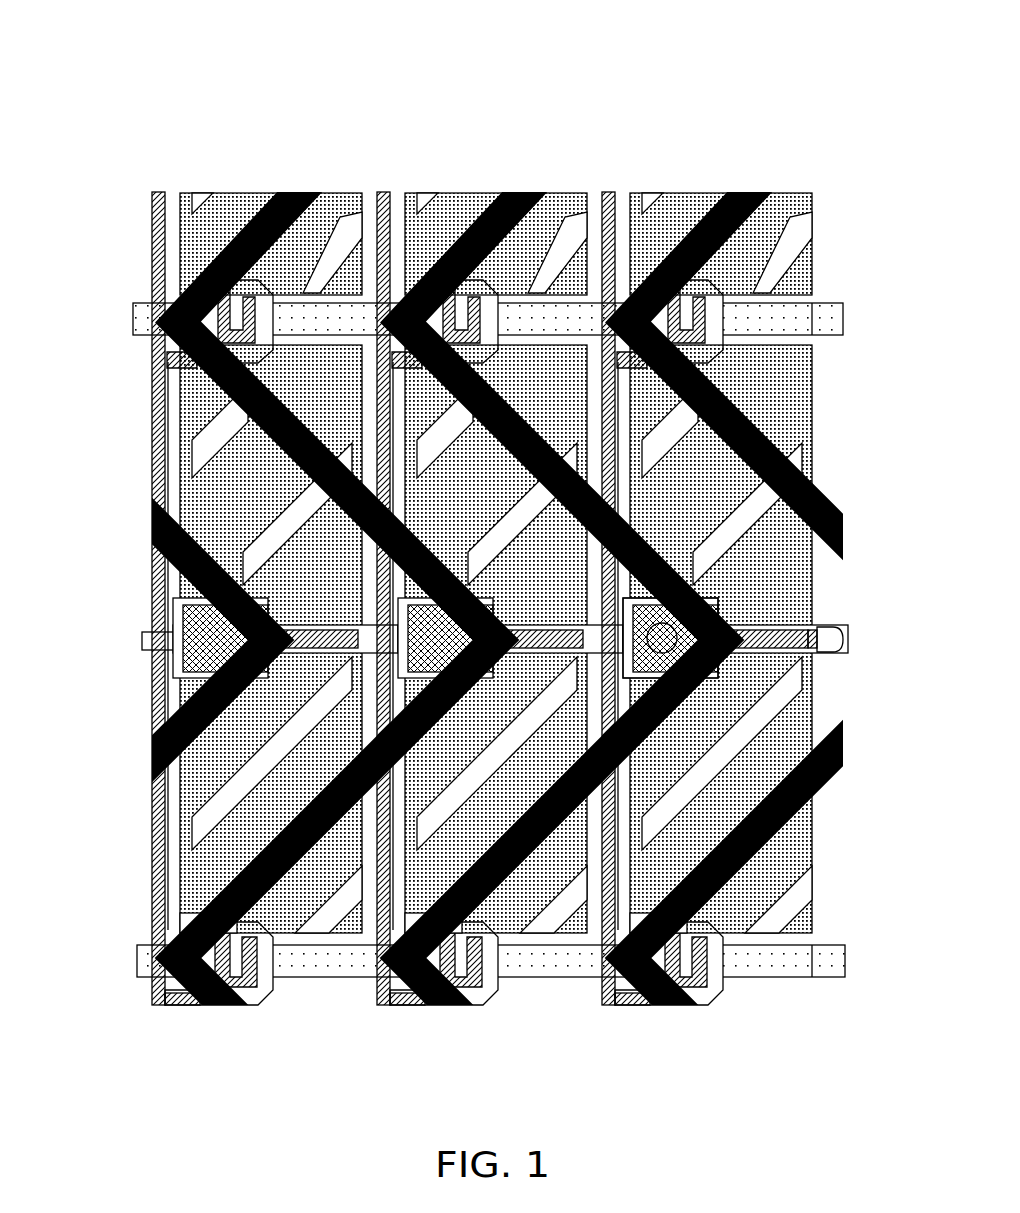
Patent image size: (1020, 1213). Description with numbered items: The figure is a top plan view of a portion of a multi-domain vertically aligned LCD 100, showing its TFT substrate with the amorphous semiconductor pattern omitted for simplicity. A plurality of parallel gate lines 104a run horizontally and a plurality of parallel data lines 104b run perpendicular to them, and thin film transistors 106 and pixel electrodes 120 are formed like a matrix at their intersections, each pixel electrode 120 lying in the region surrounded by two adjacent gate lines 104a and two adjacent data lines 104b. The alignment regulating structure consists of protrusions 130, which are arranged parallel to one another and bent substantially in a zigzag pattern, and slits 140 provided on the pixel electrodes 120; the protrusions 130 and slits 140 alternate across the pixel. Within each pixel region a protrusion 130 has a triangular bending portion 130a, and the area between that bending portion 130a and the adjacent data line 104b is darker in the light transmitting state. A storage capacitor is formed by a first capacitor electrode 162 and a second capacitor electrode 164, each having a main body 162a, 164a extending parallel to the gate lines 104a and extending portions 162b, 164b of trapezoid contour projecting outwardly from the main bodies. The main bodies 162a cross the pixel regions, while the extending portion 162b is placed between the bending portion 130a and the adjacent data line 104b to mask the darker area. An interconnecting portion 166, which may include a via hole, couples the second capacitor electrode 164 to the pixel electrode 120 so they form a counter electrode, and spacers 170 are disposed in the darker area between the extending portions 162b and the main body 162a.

The MVA LCD 100 is at (143, 78).
The gate line 104a is at (131, 318).
The data line 104b is at (152, 204).
The thin film transistor 106 is at (338, 162).
The pixel electrode 120 is at (178, 390).
The protrusion 130 is at (271, 193).
The triangular bending portion 130a is at (177, 588).
The slit 140 is at (190, 480).
The first capacitor electrode 162 is at (177, 657).
The main body of first capacitor electrode 162a is at (548, 655).
The extending portion of first capacitor electrode 162b is at (400, 674).
The second capacitor electrode 164 is at (184, 673).
The main body of second capacitor electrode 164a is at (323, 655).
The extending portion of second capacitor electrode 164b is at (212, 1005).
The interconnecting portion 166 is at (743, 617).
The spacer 170 is at (703, 600).